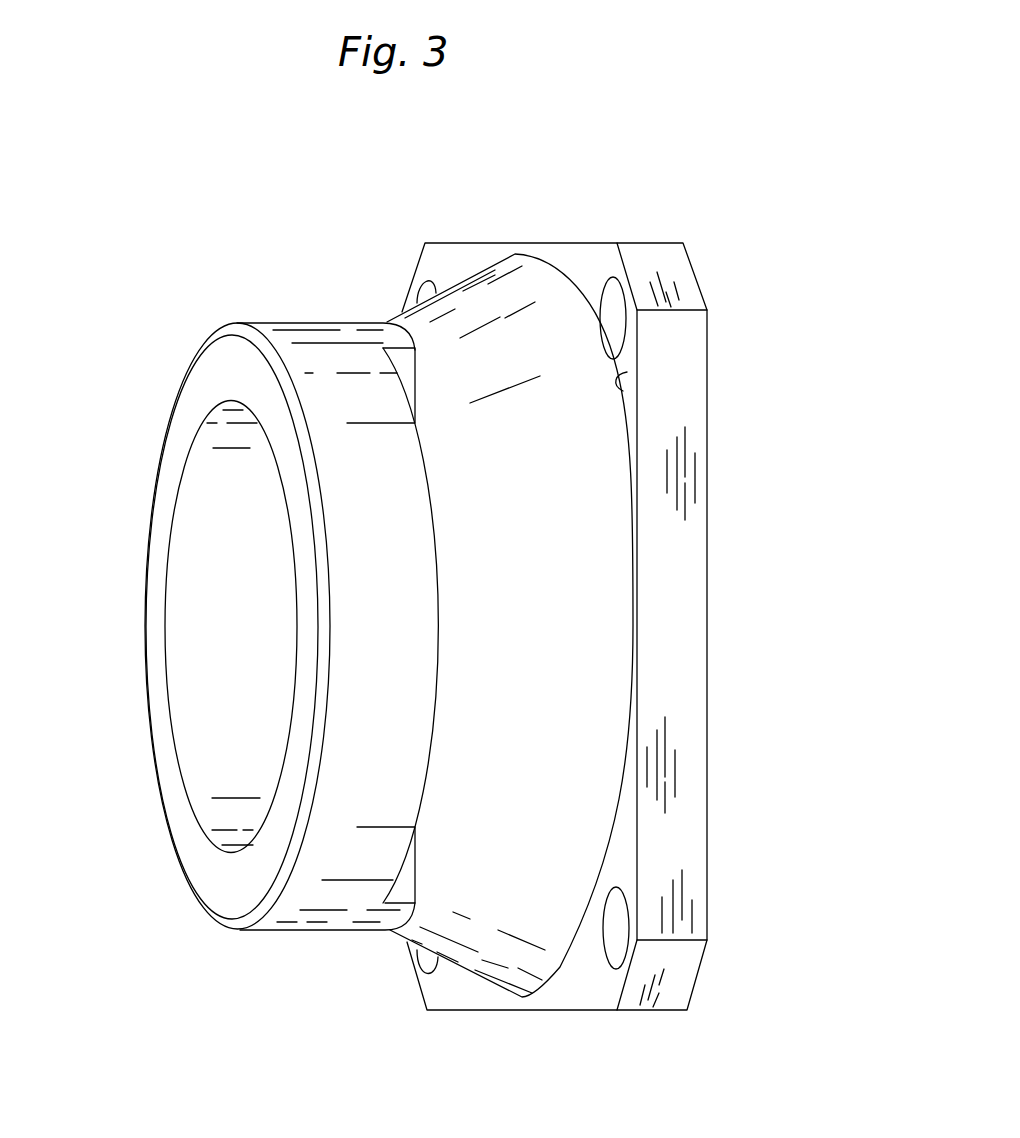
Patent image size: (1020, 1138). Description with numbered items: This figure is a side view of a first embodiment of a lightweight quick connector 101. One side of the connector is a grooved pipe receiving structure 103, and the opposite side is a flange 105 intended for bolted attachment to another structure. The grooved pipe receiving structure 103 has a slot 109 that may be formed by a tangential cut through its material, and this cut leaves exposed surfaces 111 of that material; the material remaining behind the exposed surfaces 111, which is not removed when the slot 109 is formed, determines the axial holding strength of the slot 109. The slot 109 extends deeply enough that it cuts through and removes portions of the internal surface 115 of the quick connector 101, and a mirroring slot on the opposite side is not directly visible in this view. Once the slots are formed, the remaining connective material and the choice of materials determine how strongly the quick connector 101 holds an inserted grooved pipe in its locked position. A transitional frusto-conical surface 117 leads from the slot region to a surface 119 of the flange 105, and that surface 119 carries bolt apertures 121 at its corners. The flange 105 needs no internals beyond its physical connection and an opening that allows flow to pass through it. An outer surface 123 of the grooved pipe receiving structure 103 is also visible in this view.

The lightweight quick connector 101 is at (581, 178).
The grooved pipe receiving structure 103 is at (248, 296).
The flange 105 is at (703, 230).
The slot 109 is at (383, 306).
The exposed surfaces 111 is at (413, 348).
The internal surface 115 is at (208, 473).
The transitional frusto-conical surface 117 is at (472, 960).
The surface of flange 119 is at (618, 388).
The bolt apertures 121 is at (612, 288).
The outer surface 123 is at (340, 750).